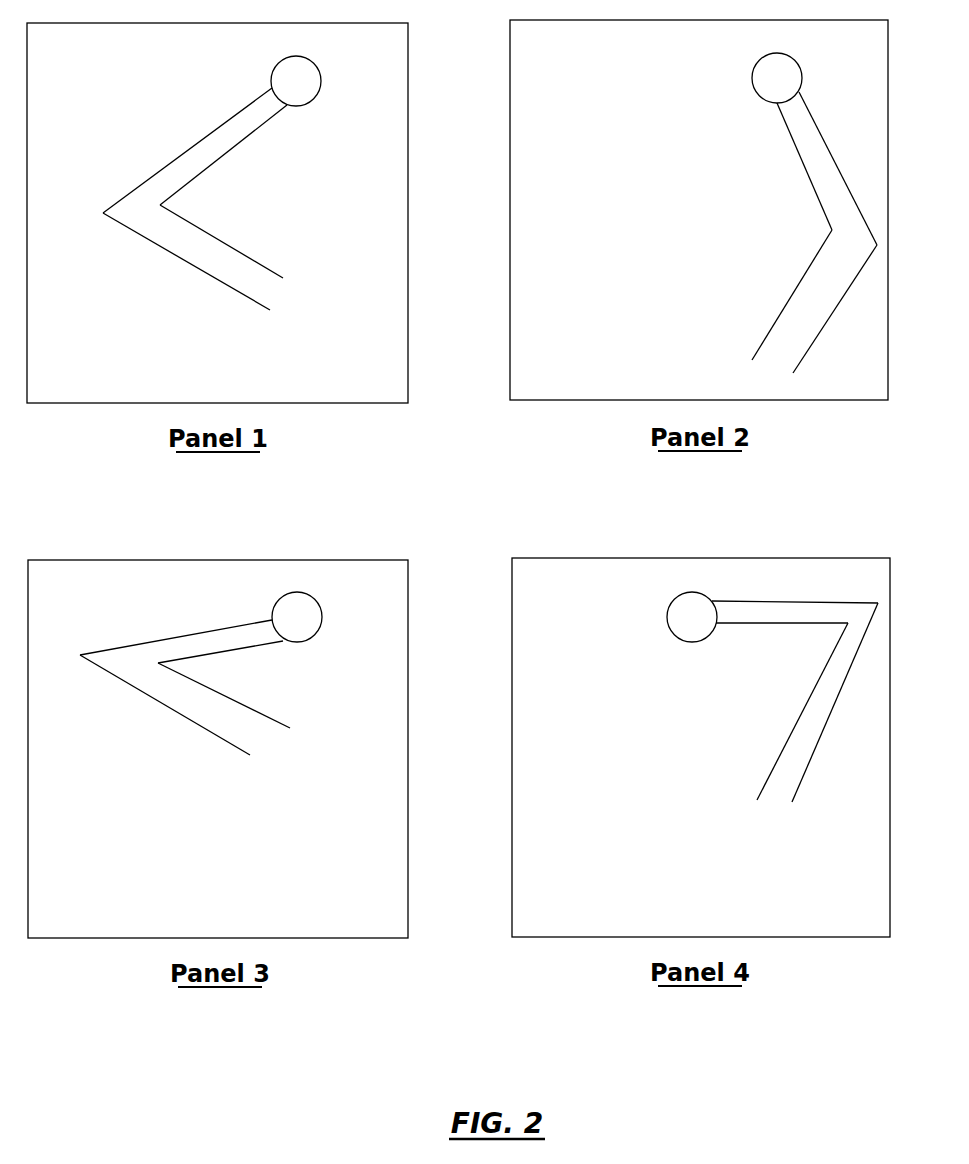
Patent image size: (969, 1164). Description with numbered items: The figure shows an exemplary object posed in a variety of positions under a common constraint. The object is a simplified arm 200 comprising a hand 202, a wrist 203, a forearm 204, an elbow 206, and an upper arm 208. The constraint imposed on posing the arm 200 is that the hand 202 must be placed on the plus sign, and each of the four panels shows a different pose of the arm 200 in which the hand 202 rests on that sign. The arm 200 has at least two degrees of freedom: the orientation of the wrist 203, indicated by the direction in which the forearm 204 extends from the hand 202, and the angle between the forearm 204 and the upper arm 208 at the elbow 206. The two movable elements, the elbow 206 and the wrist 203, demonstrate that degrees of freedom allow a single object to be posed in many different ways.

The arm 200 is at (453, 460).
The hand 202 is at (312, 95).
The wrist 203 is at (262, 78).
The forearm 204 is at (225, 138).
The elbow 206 is at (93, 215).
The upper arm 208 is at (263, 290).